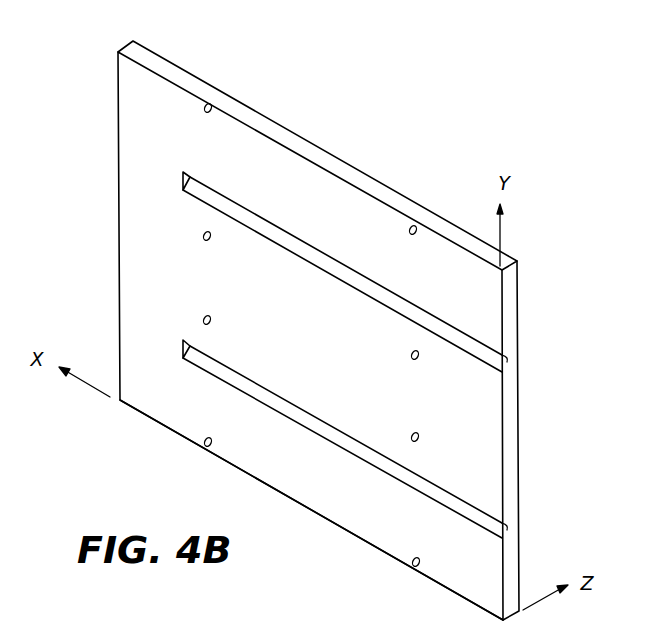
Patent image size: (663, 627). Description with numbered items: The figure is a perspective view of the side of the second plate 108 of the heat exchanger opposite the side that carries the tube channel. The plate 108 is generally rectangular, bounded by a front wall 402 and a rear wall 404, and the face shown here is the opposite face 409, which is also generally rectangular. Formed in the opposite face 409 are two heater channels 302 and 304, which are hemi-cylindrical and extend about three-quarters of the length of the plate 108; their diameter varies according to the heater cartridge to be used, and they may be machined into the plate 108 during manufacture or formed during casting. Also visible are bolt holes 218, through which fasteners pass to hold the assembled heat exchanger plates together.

The second plate 108 is at (287, 172).
The front wall 402 is at (118, 90).
The rear wall 404 is at (505, 302).
The opposite face 409 is at (357, 510).
The bolt holes 218 is at (208, 100).
The heater channel 304 is at (502, 364).
The heater channel 302 is at (502, 527).